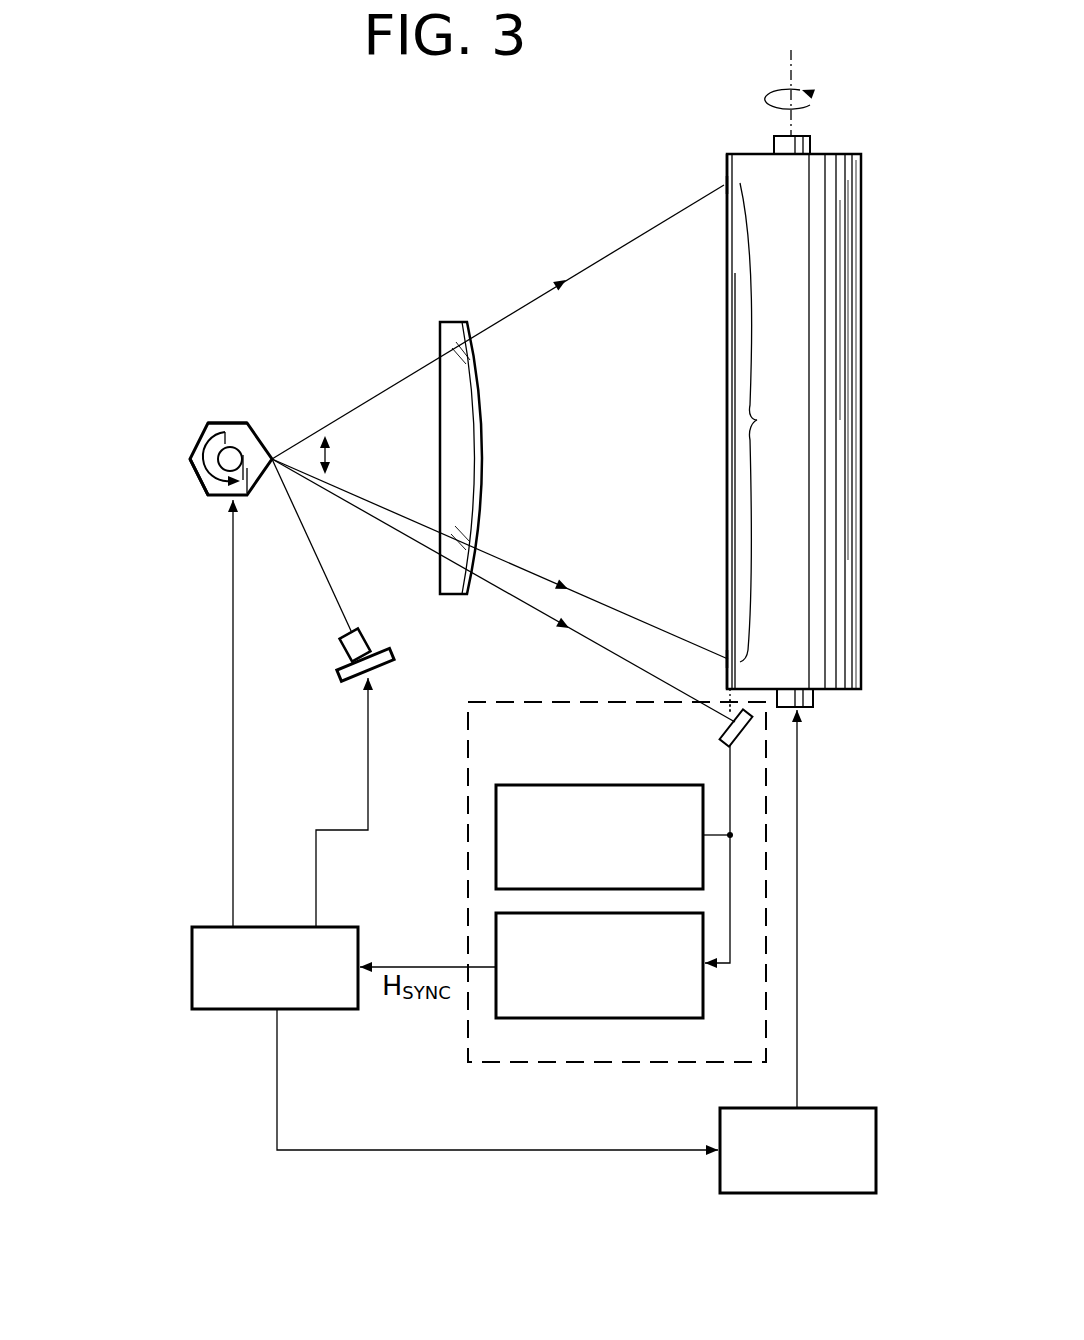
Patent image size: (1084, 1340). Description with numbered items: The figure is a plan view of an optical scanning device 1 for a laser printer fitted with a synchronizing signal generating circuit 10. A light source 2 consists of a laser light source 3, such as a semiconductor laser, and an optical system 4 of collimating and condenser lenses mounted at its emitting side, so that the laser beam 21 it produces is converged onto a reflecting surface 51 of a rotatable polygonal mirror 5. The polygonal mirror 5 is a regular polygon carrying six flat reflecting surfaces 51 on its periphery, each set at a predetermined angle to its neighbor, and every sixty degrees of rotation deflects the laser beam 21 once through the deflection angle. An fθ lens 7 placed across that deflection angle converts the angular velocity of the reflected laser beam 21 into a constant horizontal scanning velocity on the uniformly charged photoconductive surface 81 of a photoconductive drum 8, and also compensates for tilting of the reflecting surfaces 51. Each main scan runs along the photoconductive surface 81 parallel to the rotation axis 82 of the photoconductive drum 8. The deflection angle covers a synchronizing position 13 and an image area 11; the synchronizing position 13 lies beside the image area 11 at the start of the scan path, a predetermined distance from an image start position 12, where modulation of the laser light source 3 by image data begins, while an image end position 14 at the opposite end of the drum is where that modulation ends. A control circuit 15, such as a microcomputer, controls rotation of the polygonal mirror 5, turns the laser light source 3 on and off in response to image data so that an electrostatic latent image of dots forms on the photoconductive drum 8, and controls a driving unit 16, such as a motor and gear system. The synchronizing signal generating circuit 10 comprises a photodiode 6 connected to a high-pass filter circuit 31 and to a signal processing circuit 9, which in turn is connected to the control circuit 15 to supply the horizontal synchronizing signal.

The optical scanning device 1 is at (258, 210).
The light source 2 is at (328, 662).
The laser light source 3 is at (393, 653).
The optical system 4 is at (360, 633).
The polygonal mirror 5 is at (215, 422).
The reflecting surface 51 is at (242, 422).
The photodiode 6 is at (738, 742).
The fθ lens 7 is at (467, 400).
The photoconductive drum 8 is at (765, 378).
The signal processing circuit 9 is at (703, 1003).
The synchronizing signal generating circuit 10 is at (466, 778).
The image area 11 is at (771, 422).
The image start position 12 is at (727, 656).
The synchronizing position 13 is at (724, 730).
The image end position 14 is at (726, 185).
The control circuit 15 is at (212, 1010).
The driving unit 16 is at (838, 1108).
The laser beam 21 is at (605, 257).
The high-pass filter circuit 31 is at (568, 785).
The photoconductive surface 81 is at (725, 469).
The rotation axis 82 is at (776, 138).